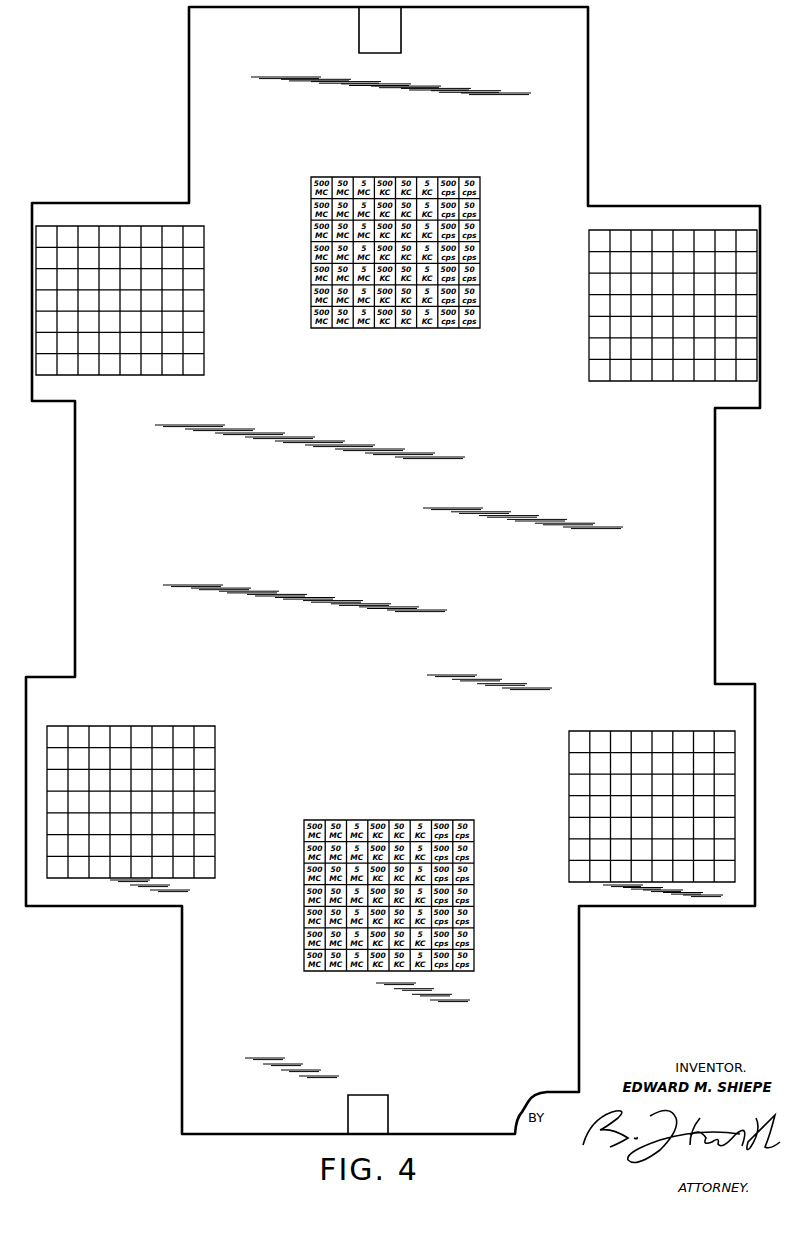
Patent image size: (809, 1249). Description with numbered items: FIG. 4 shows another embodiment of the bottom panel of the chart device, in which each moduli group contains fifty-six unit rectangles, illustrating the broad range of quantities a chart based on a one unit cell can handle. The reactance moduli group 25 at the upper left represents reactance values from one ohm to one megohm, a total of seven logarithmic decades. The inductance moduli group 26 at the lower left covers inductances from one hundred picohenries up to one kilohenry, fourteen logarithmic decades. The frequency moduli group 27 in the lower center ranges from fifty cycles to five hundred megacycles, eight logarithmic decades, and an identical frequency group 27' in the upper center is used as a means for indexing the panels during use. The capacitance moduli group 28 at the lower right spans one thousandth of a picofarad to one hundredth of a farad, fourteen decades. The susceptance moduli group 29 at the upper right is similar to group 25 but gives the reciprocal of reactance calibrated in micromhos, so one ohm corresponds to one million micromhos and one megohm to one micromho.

The reactance moduli group 25 is at (147, 383).
The inductance moduli group 26 is at (235, 713).
The frequency moduli group 27 is at (369, 907).
The frequency moduli group (indexing) 27' is at (395, 264).
The capacitance moduli group 28 is at (551, 741).
The susceptance moduli group 29 is at (621, 396).